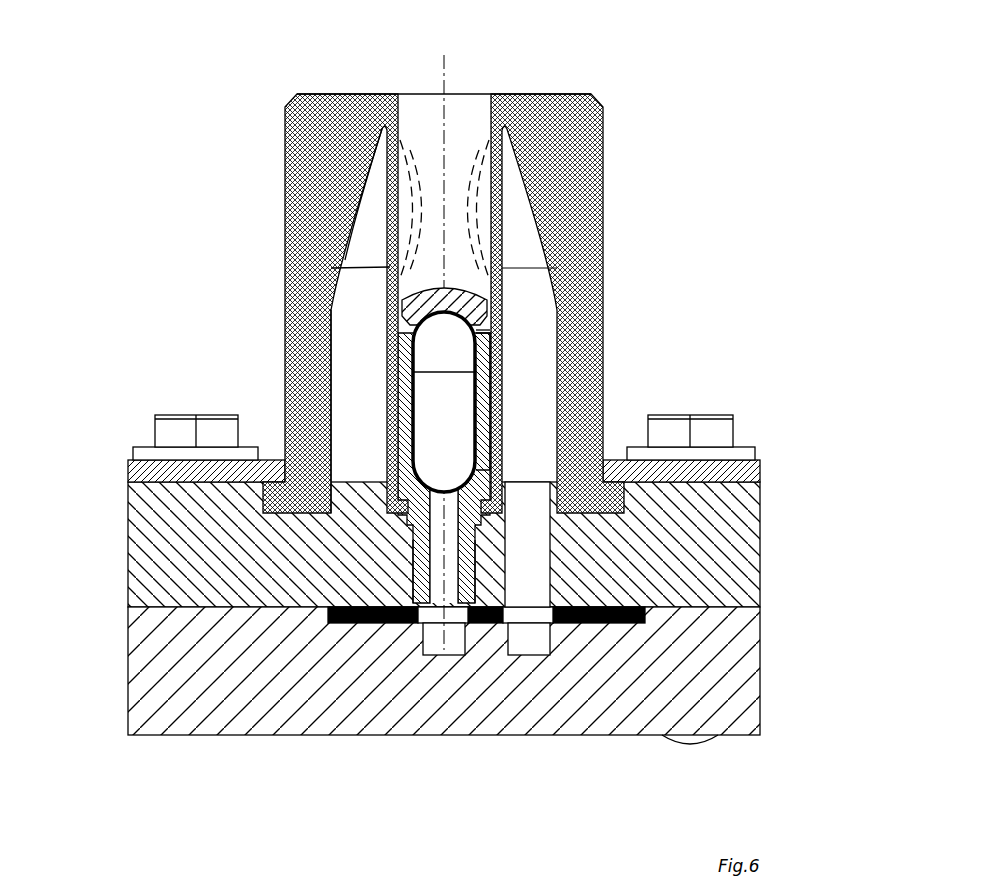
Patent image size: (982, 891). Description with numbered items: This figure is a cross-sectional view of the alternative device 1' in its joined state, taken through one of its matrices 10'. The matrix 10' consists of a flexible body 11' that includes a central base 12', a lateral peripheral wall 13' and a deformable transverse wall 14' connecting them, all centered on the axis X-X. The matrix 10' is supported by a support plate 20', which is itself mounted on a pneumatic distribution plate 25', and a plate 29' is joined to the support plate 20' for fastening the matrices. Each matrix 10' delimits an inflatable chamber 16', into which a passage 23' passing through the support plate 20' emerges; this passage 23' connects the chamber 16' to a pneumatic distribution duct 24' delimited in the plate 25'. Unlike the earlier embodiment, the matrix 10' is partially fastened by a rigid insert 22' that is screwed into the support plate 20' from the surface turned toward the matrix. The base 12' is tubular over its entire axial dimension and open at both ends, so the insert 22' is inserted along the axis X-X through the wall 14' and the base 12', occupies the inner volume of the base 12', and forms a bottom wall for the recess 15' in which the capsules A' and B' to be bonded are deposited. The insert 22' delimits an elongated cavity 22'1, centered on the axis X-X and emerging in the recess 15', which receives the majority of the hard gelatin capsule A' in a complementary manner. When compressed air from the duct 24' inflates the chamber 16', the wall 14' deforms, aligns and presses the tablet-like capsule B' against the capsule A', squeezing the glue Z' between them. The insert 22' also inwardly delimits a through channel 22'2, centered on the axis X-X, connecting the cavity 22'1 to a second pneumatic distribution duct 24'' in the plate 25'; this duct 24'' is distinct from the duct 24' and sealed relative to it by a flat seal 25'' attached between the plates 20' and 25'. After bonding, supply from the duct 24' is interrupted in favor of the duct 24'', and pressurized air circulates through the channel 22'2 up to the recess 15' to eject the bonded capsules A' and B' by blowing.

The device 1' is at (387, 261).
The matrix 10' is at (403, 303).
The flexible body 11' is at (270, 321).
The central base 12' is at (288, 404).
The lateral peripheral wall 13' is at (286, 200).
The deformable transverse wall 14' is at (290, 280).
The recess 15' is at (467, 156).
The inflatable chamber 16' is at (447, 319).
The support plate 20' is at (411, 544).
The rigid insert 22' is at (331, 468).
The elongated cavity 22'1 is at (548, 401).
The through channel 22'2 is at (266, 571).
The passage 23' is at (658, 544).
The pneumatic distribution duct 24' is at (526, 703).
The pneumatic distribution duct 24'' is at (443, 708).
The pneumatic distribution plate 25' is at (415, 675).
The flat seal 25'' is at (473, 704).
The plate 29' is at (411, 448).
The capsule A' is at (538, 402).
The capsule B' is at (540, 271).
The glue Z' is at (570, 312).
The axis X-X is at (427, 340).